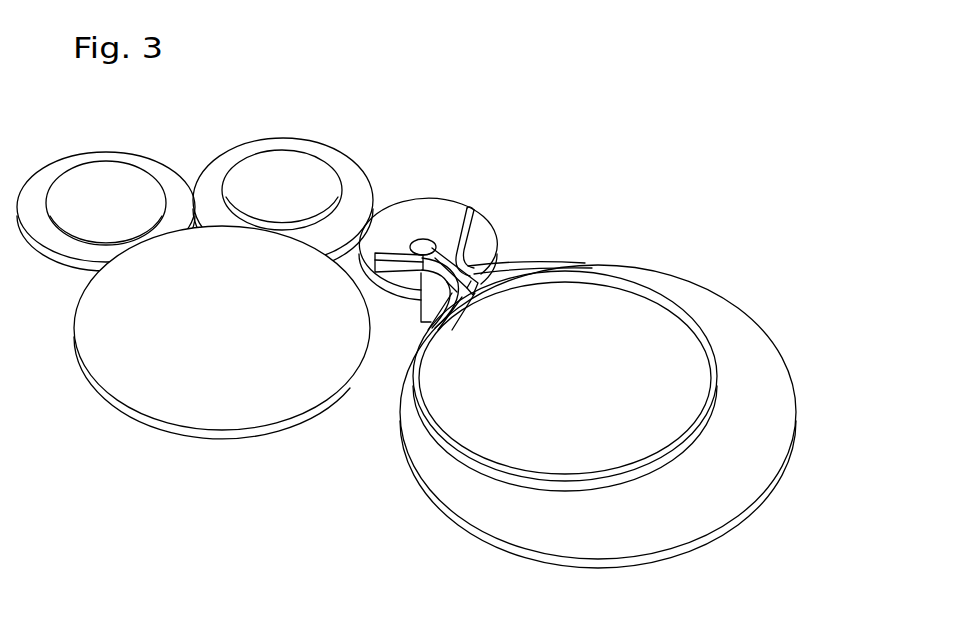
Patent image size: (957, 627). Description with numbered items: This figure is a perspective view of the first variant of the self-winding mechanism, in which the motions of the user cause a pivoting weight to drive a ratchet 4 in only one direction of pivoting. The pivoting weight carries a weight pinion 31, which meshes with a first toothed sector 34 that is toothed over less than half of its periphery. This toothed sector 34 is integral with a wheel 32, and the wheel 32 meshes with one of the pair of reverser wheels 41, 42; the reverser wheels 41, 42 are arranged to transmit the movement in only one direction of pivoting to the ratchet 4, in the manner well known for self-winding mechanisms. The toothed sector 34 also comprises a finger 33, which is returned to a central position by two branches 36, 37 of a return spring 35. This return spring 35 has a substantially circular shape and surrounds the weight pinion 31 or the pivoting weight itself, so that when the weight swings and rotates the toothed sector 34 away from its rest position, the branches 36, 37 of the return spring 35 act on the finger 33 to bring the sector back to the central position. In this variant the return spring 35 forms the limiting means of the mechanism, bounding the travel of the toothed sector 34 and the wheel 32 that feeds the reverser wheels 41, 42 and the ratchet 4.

The ratchet 4 is at (178, 452).
The weight pinion 31 is at (411, 464).
The wheel 32 is at (428, 200).
The finger 33 is at (507, 270).
The first toothed sector 34 is at (410, 334).
The return spring 35 is at (477, 462).
The branch 36 is at (472, 228).
The branch 37 is at (397, 265).
The reverser wheel 41 is at (326, 126).
The reverser wheel 42 is at (121, 132).